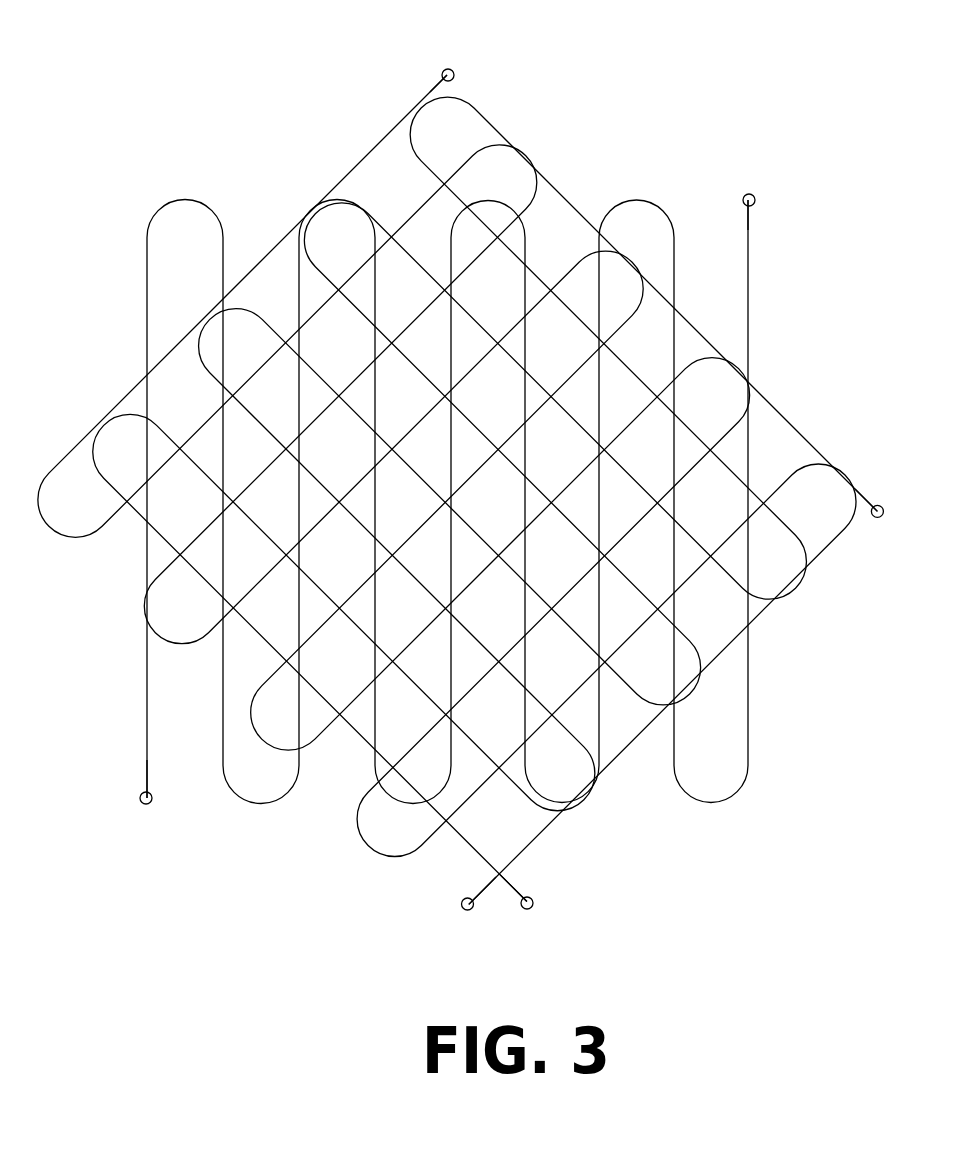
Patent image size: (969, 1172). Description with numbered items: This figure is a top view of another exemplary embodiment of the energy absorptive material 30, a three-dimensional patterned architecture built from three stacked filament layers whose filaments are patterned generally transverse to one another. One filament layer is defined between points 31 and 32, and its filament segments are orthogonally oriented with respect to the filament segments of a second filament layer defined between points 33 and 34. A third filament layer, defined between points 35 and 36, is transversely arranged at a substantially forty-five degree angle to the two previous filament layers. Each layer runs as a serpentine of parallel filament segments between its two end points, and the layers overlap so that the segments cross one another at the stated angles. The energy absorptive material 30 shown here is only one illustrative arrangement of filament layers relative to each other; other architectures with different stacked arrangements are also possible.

The energy absorptive material 30 is at (662, 97).
The point 31 is at (876, 518).
The point 32 is at (534, 904).
The point 33 is at (461, 908).
The point 34 is at (454, 71).
The point 35 is at (756, 196).
The point 36 is at (142, 806).